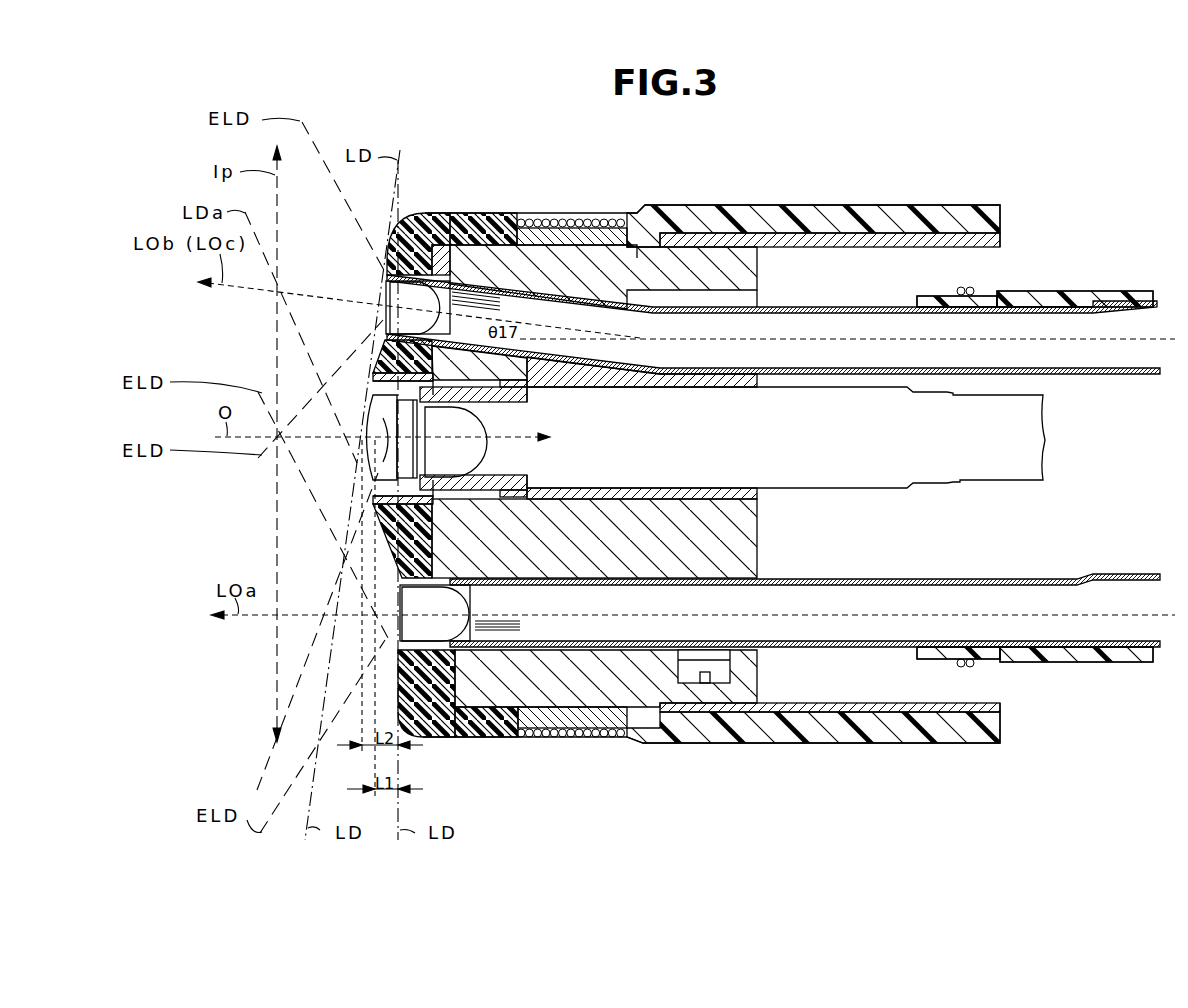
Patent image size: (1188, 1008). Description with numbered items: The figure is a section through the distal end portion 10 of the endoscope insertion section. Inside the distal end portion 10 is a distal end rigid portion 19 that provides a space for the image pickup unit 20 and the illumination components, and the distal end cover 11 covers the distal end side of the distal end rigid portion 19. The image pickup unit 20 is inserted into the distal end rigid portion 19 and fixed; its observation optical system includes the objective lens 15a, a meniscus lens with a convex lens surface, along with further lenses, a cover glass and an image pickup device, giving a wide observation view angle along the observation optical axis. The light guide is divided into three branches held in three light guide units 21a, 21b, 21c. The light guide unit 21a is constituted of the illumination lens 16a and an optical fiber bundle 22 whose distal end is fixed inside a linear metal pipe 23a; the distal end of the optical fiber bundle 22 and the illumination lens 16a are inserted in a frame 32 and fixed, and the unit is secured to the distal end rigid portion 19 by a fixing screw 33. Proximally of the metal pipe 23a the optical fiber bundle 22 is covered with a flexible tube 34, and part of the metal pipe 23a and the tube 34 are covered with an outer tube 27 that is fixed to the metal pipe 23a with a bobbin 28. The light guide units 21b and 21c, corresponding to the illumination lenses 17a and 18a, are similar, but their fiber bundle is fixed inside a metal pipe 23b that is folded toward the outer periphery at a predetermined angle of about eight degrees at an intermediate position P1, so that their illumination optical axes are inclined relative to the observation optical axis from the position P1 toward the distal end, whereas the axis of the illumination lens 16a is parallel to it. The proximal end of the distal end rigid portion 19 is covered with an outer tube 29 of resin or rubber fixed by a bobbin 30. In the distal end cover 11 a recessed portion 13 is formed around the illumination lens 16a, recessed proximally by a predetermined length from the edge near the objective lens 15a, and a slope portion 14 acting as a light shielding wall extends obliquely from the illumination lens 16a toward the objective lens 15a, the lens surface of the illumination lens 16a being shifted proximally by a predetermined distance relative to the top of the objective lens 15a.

The distal end portion 10 is at (698, 196).
The distal end cover 11 is at (420, 207).
The recessed portion 13 is at (397, 688).
The slope portion 14 is at (380, 552).
The objective lens 15a is at (373, 478).
The illumination lens 16a is at (393, 632).
The illumination lens 17a is at (311, 321).
The illumination lens 18a is at (390, 325).
The distal end rigid portion 19 is at (668, 260).
The image pickup unit 20 is at (995, 422).
The light guide unit 21a is at (1063, 672).
The light guide unit 21b is at (1039, 251).
The light guide unit 21c is at (1062, 285).
The optical fiber bundle 22 is at (890, 330).
The metal pipe 23a is at (888, 647).
The metal pipe 23b is at (743, 303).
The outer tube 27 is at (1098, 296).
The bobbin 28 is at (968, 288).
The outer tube 29 is at (943, 223).
The bobbin 30 is at (585, 218).
The frame 32 is at (458, 272).
The fixing screw 33 is at (693, 683).
The flexible tube 34 is at (1153, 291).
The intermediate position P1 is at (630, 257).